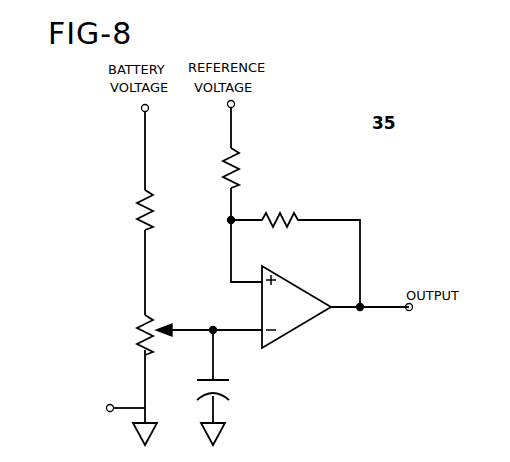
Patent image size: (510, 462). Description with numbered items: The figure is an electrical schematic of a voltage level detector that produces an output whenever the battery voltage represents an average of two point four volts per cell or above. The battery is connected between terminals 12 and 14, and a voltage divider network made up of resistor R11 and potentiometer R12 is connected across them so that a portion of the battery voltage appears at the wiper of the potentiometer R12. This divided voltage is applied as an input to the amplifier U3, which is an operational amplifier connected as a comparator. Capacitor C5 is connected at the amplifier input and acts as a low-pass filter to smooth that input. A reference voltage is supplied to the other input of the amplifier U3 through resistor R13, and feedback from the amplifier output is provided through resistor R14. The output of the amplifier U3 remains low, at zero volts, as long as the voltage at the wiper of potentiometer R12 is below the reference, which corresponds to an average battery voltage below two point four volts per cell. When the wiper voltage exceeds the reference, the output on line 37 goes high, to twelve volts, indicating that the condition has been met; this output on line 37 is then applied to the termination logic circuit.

The wire 12 is at (141, 112).
The wire 14 is at (110, 412).
The line 37 is at (385, 309).
The resistor R11 is at (126, 210).
The potentiometer R12 is at (156, 335).
The resistor R13 is at (249, 168).
The resistor R14 is at (295, 251).
The capacitor C5 is at (226, 375).
The amplifier U3 is at (335, 307).